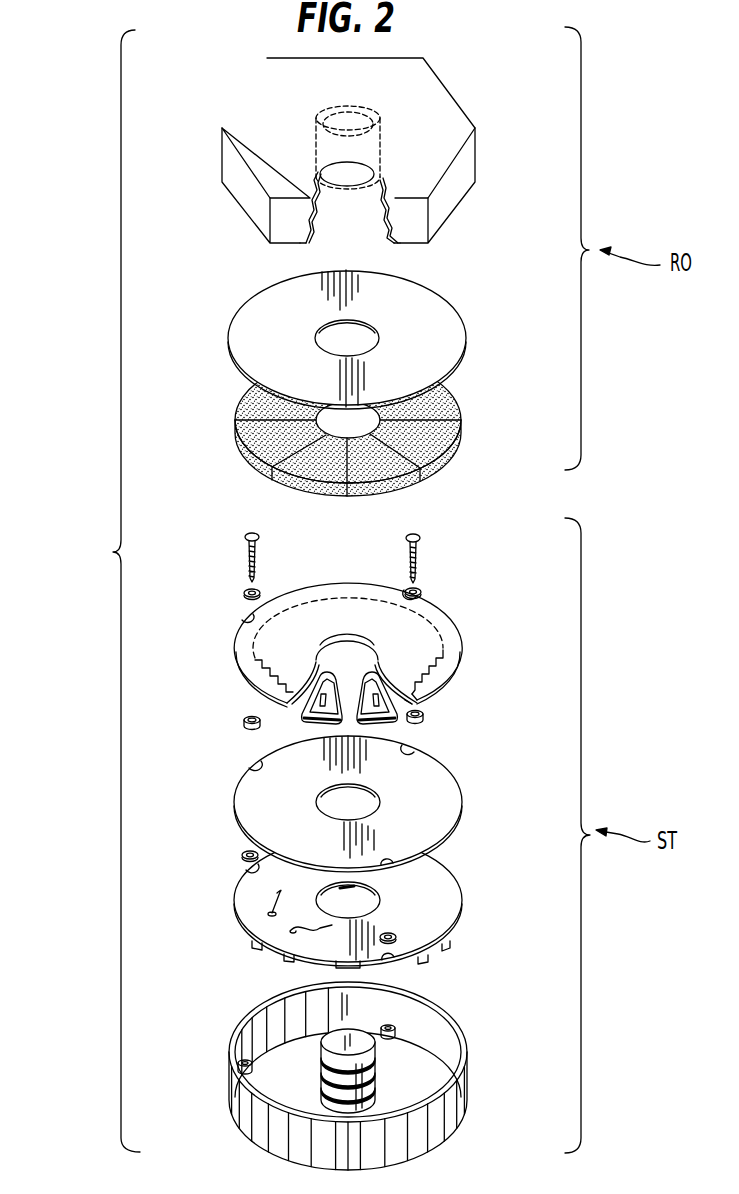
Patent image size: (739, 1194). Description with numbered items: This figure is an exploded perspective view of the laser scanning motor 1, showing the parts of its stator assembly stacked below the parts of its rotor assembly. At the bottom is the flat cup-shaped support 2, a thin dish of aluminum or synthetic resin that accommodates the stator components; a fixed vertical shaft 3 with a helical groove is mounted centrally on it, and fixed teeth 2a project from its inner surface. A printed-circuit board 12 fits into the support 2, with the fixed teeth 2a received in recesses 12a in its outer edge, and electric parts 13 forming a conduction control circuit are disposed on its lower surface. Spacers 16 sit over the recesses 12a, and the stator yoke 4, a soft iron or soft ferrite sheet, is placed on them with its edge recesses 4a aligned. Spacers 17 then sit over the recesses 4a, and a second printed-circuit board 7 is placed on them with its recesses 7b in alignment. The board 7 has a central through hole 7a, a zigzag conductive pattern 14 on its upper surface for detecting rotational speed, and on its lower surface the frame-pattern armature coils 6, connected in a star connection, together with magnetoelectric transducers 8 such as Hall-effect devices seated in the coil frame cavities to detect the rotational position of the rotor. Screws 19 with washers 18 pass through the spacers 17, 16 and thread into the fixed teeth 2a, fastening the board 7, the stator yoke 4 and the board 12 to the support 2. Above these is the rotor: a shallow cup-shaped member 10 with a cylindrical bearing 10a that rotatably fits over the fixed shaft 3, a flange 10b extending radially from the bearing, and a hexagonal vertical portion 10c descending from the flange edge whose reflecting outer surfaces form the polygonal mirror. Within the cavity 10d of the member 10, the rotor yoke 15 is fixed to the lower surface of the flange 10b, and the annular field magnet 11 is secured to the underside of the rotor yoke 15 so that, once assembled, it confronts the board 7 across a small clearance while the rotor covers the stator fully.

The laser scanning motor 1 is at (105, 553).
The flat cup-shaped support 2 is at (367, 1076).
The fixed teeth 2a is at (396, 1031).
The fixed vertical shaft 3 is at (372, 1078).
The stator yoke 4 is at (346, 804).
The recesses 4a is at (250, 766).
The armature coils 6 is at (318, 722).
The printed-circuit board 7 is at (345, 632).
The central through hole 7a is at (380, 648).
The recesses 7b is at (245, 621).
The magnetoelectric transducers 8 is at (419, 698).
The member 10 is at (371, 162).
The cylindrical bearing 10a is at (375, 185).
The flange 10b is at (433, 85).
The vertical portion 10c is at (431, 244).
The cavity 10d is at (333, 218).
The annular field magnet 11 is at (462, 425).
The printed-circuit board 12 is at (350, 908).
The recesses 12a is at (250, 873).
The electric parts 13 is at (438, 958).
The zigzag conductive pattern 14 is at (441, 688).
The rotor yoke 15 is at (465, 324).
The spacers 16 is at (244, 854).
The spacers 17 is at (244, 724).
The washers 18 is at (244, 593).
The screws 19 is at (246, 538).